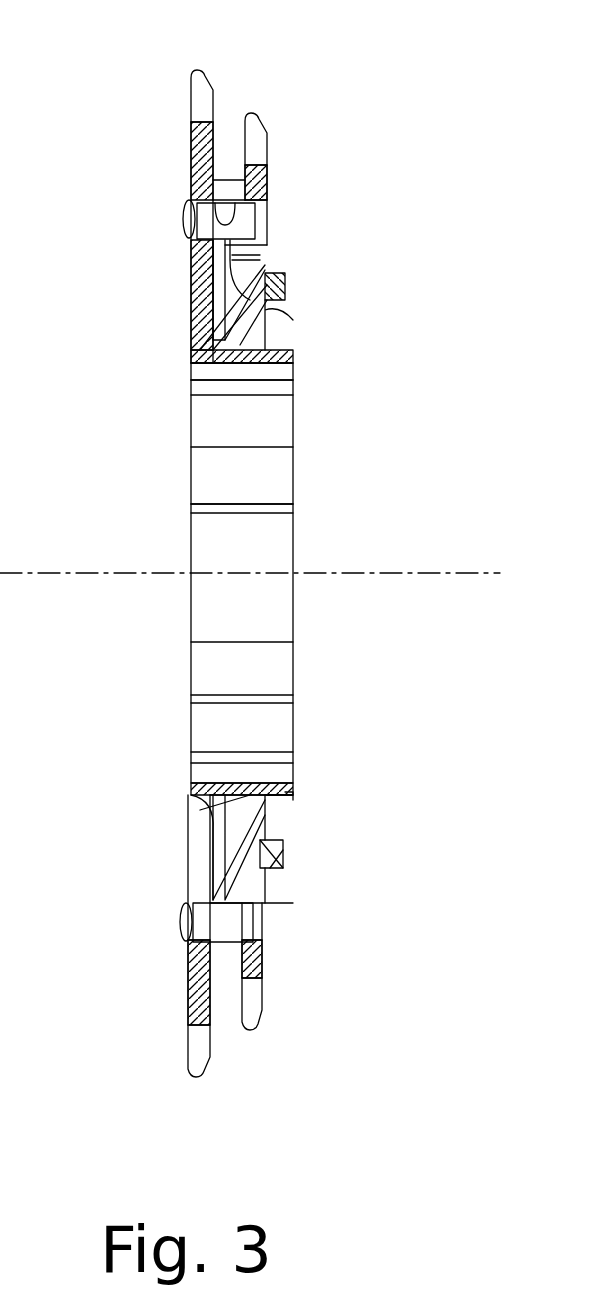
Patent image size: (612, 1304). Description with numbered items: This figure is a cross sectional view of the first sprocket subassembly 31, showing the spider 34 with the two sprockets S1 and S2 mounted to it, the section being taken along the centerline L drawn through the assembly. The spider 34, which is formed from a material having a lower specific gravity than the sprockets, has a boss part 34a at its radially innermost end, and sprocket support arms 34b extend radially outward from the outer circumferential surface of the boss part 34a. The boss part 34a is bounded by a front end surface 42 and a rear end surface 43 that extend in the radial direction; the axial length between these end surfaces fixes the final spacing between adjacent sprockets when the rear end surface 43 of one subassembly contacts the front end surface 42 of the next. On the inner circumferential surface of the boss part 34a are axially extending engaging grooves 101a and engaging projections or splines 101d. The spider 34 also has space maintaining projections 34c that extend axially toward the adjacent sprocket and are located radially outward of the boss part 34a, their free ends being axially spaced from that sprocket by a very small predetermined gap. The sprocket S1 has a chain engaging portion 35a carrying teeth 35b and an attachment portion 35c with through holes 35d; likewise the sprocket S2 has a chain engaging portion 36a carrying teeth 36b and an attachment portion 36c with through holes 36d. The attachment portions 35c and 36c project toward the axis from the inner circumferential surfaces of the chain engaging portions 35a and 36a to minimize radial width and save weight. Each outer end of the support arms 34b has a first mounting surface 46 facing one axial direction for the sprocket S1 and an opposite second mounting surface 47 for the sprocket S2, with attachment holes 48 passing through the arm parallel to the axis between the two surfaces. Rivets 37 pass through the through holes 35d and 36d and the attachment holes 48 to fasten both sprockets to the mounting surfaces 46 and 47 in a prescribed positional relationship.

The first sprocket subassembly 31 is at (322, 100).
The spider 34 is at (300, 353).
The boss part 34a is at (191, 356).
The sprocket support arms 34b is at (191, 340).
The space maintaining projections 34c is at (275, 310).
The chain engaging portion 35a is at (191, 145).
The teeth 35b is at (197, 70).
The attachment portion 35c is at (213, 280).
The through holes 35d is at (190, 220).
The chain engaging portion 36a is at (267, 178).
The teeth 36b is at (267, 133).
The attachment portion 36c is at (285, 288).
The through holes 36d is at (267, 232).
The rivets 37 is at (197, 238).
The front end surface 42 is at (200, 793).
The rear end surface 43 is at (293, 795).
The first mounting surface 46 is at (191, 178).
The second mounting surface 47 is at (262, 195).
The attachment holes 48 is at (240, 180).
The engaging grooves 101a is at (240, 365).
The engaging projections 101d is at (270, 481).
The sprocket S1 is at (188, 92).
The sprocket S2 is at (265, 130).
The axis L is at (250, 563).